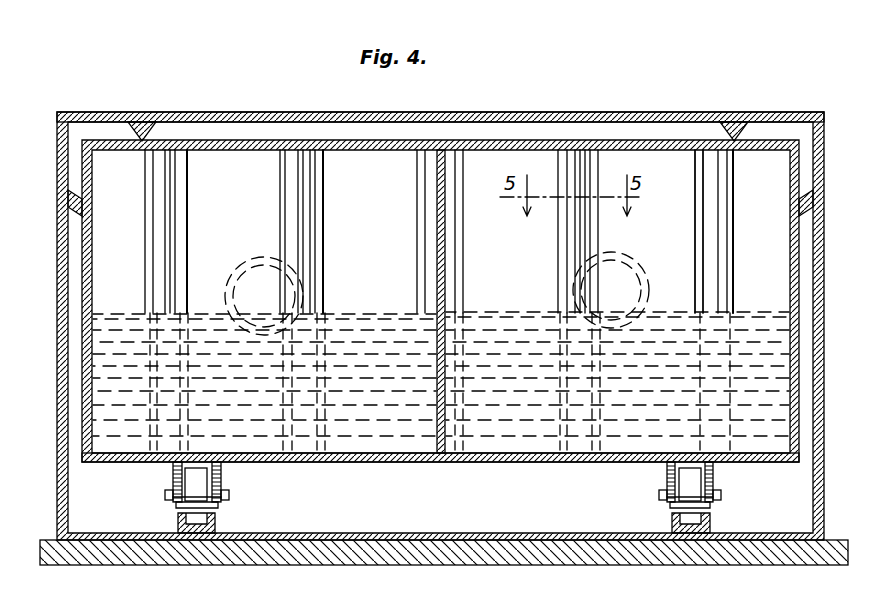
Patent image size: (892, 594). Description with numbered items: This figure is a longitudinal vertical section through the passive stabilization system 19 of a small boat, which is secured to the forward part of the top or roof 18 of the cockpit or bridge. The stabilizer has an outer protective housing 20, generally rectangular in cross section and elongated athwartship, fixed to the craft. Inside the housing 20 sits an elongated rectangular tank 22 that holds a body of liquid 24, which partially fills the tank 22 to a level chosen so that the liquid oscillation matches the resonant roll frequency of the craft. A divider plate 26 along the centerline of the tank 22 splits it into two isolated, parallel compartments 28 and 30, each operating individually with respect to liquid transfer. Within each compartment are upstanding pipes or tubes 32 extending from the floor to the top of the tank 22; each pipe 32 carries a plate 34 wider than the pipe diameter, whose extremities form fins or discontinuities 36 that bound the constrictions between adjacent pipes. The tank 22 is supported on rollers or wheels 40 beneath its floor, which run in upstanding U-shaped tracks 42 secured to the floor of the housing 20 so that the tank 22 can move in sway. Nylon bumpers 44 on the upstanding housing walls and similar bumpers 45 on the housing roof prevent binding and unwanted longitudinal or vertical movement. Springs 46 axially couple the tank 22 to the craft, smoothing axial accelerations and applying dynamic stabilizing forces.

The top or roof 18 is at (560, 566).
The passive stabilization system 19 is at (262, 108).
The outer protective housing 20 is at (605, 112).
The tank 22 is at (380, 462).
The body of liquid 24 is at (372, 323).
The divider plate 26 is at (447, 393).
The compartment 28 is at (635, 423).
The compartment 30 is at (365, 158).
The pipes or tubes 32 is at (303, 182).
The plate 34 is at (323, 221).
The fins or discontinuities 36 is at (696, 283).
The rollers or wheels 40 is at (192, 478).
The U-shaped tracks 42 is at (180, 524).
The nylon bumpers 44 is at (73, 212).
The bumpers 45 is at (142, 135).
The springs 46 is at (262, 259).